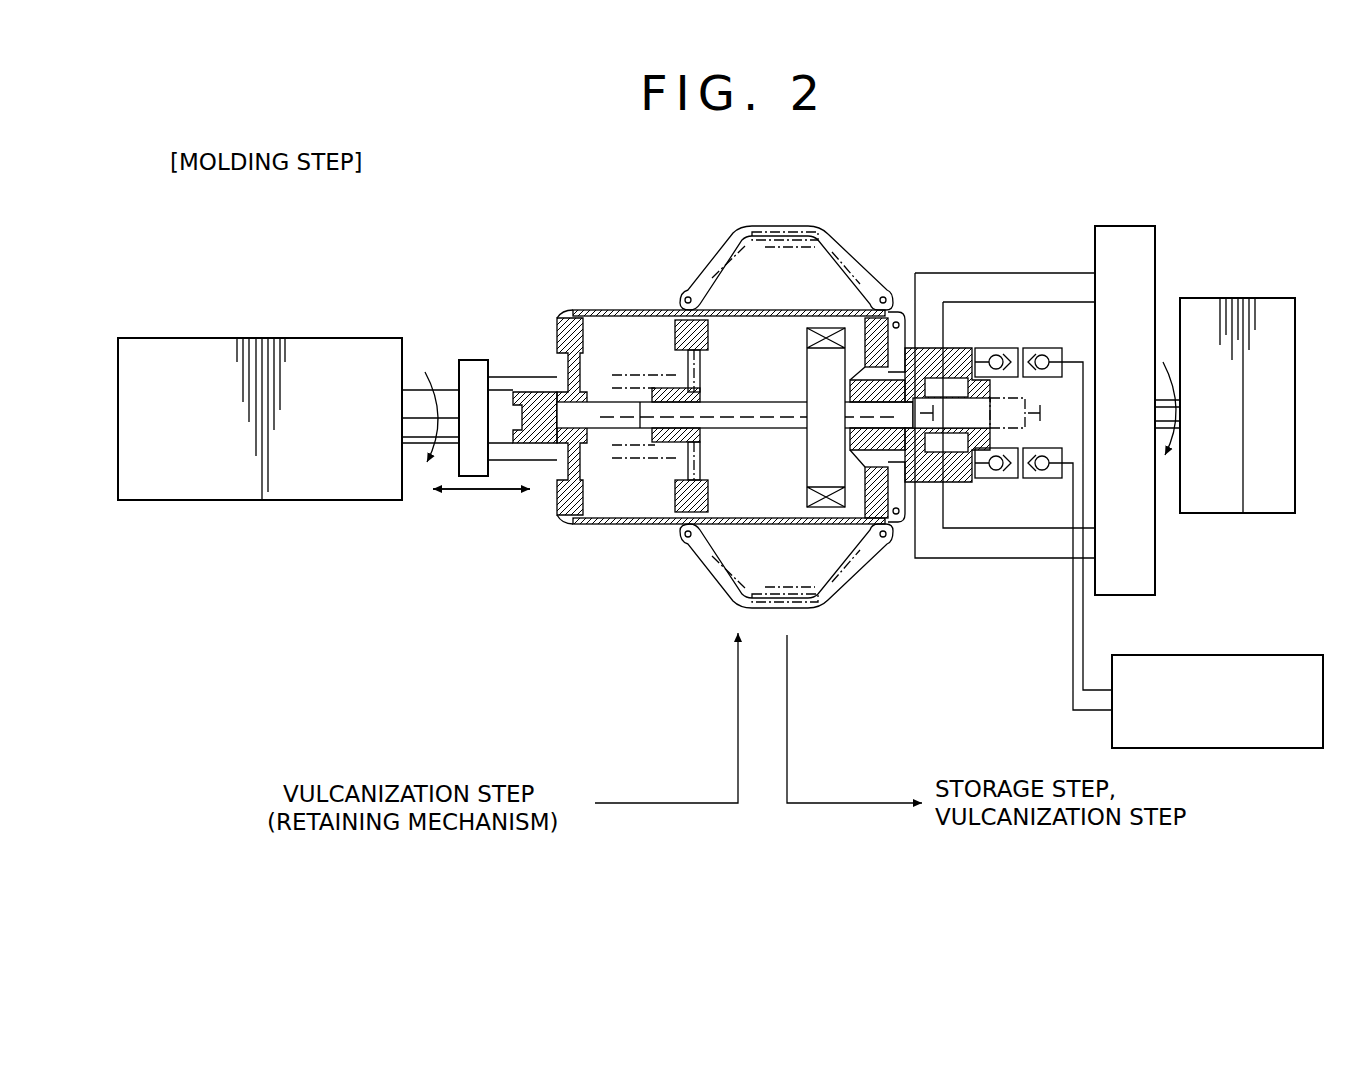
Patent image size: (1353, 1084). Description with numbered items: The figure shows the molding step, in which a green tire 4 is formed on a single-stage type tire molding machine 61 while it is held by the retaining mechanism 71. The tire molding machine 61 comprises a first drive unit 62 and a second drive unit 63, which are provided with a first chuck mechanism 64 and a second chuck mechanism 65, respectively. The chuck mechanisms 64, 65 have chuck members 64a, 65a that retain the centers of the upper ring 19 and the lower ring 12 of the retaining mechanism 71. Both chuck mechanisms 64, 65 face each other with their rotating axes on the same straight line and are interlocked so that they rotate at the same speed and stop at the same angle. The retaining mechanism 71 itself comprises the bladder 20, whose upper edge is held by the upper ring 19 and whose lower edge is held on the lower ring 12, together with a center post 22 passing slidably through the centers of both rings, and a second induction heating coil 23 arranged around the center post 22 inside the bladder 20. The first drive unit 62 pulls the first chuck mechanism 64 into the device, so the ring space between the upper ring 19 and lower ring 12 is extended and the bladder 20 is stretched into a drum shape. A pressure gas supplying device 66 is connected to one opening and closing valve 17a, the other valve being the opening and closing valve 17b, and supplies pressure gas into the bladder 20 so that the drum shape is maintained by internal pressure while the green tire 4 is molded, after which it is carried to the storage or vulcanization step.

The green tire 4 is at (831, 600).
The lower ring 12 is at (898, 522).
The opening and closing valve 17a is at (1005, 470).
The opening and closing valve 17b is at (1005, 350).
The upper ring 19 is at (666, 494).
The bladder 20 is at (722, 568).
The center post 22 is at (748, 403).
The second induction heating coil 23 is at (817, 452).
The tire molding machine 61 is at (1065, 190).
The first drive unit 62 is at (361, 345).
The second drive unit 63 is at (1228, 300).
The first chuck mechanism 64 is at (470, 356).
The chuck member 64a is at (519, 380).
The second chuck mechanism 65 is at (1131, 225).
The chuck member 65a is at (1022, 278).
The pressure gas supplying device 66 is at (1276, 655).
The retaining mechanism 71 is at (881, 272).